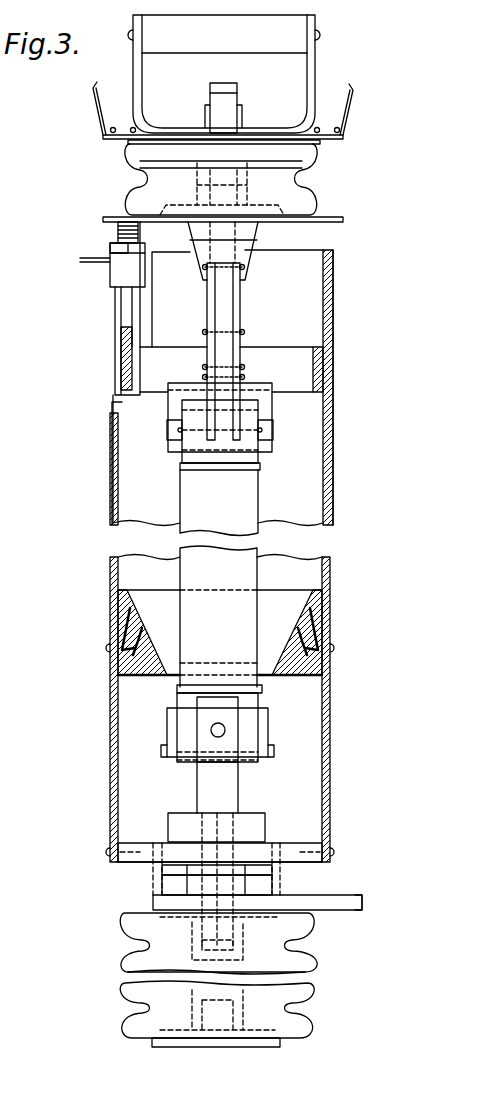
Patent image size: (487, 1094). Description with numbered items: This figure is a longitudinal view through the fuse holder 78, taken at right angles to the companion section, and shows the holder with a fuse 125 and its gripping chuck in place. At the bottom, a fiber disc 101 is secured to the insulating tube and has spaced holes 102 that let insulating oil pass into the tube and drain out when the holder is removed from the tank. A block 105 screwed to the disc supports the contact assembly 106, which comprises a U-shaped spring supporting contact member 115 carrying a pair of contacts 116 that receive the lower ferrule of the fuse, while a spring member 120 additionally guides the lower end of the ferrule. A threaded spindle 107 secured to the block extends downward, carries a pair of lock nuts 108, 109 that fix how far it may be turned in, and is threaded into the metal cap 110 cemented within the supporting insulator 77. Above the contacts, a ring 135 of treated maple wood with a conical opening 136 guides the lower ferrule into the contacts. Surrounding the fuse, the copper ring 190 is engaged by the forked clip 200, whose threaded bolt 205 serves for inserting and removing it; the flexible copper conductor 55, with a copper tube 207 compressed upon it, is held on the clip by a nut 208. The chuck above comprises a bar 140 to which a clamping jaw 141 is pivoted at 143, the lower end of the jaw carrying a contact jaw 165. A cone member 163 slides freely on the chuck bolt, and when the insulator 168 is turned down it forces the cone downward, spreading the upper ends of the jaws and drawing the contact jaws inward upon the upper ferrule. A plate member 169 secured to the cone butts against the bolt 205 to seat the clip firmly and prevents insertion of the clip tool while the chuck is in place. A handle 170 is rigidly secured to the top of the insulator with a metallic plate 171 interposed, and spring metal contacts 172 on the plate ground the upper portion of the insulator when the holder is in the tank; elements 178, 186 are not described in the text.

The handle 170 is at (280, 40).
The spring metal contacts 172 is at (353, 93).
The metallic plate 171 is at (112, 140).
The upturned arm 178 is at (95, 84).
The insulator 168 is at (295, 180).
The plate member 169 is at (340, 218).
The threaded bolt 205 is at (118, 238).
The nut 208 is at (135, 249).
The copper tube 207 is at (120, 265).
The flexible copper conductor 55 is at (90, 259).
The forked clip 200 is at (115, 296).
The copper ring 190 is at (126, 370).
The cone member 163 is at (252, 232).
The bar 140 is at (222, 325).
The clamping jaw 141 is at (233, 295).
The pivot 143 is at (240, 332).
The contact jaw 165 is at (223, 457).
The column 186 is at (257, 510).
The fuse holder 78 is at (330, 456).
The fuse 125 is at (267, 513).
The ring 135 is at (317, 621).
The conical opening 136 is at (308, 607).
The contacts 116 is at (262, 690).
The U-shaped spring supporting contact member 115 is at (205, 704).
The spring member 120 is at (268, 741).
The contact assembly 106 is at (192, 767).
The block 105 is at (252, 817).
The spaced holes 102 is at (285, 843).
The threaded spindle 107 is at (162, 873).
The lock nut 108 is at (162, 882).
The lock nut 109 is at (153, 898).
The metal cap 110 is at (298, 891).
The fiber disc 101 is at (285, 859).
The supporting insulator 77 is at (302, 968).